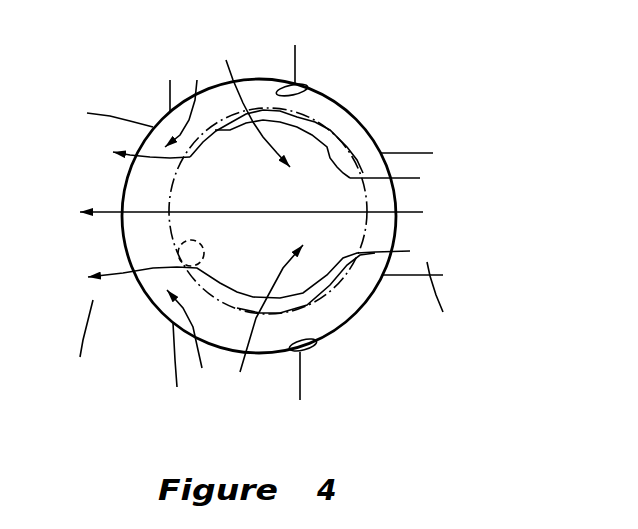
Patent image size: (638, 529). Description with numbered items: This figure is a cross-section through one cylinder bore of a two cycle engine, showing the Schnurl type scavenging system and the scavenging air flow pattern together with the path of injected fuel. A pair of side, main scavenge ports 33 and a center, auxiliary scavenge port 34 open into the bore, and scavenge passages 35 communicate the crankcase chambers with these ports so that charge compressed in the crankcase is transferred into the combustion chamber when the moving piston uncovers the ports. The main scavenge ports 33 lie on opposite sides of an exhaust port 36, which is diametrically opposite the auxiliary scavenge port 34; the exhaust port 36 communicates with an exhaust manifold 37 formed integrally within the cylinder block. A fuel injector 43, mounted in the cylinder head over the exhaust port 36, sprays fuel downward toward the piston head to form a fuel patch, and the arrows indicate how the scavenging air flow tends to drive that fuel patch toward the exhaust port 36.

The main scavenge port 33 is at (307, 87).
The auxiliary scavenge port 34 is at (430, 196).
The scavenge passage 35 is at (317, 217).
The exhaust port 36 is at (259, 151).
The exhaust manifold 37 is at (118, 347).
The fuel injector 43 is at (240, 298).